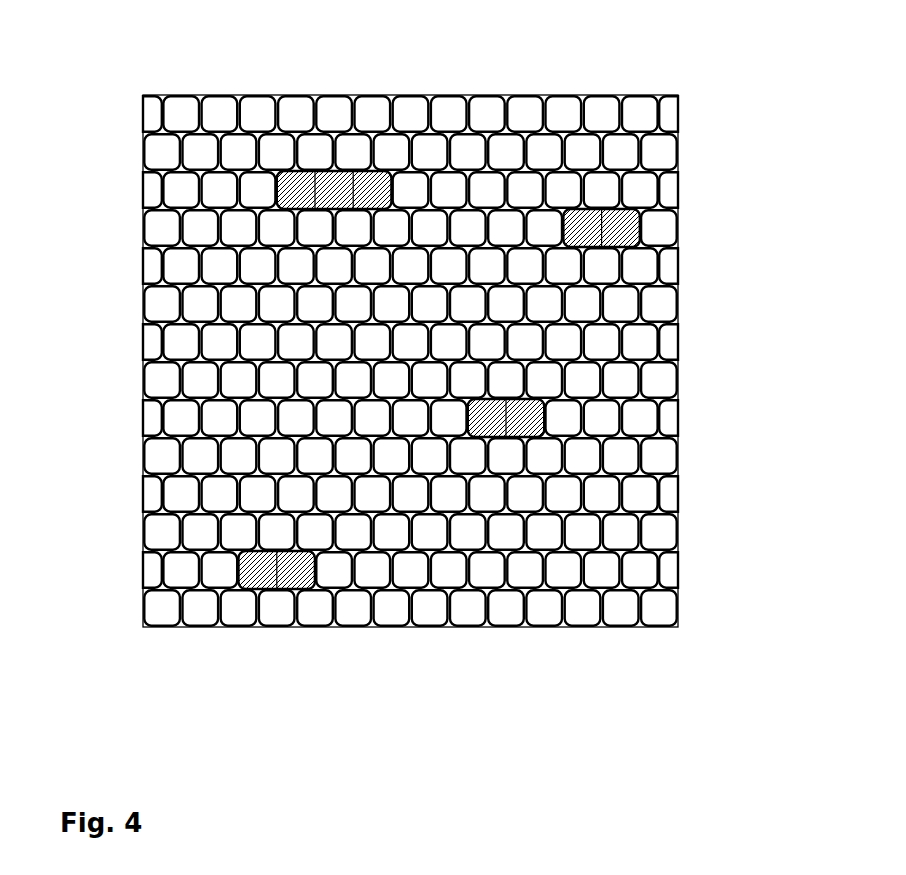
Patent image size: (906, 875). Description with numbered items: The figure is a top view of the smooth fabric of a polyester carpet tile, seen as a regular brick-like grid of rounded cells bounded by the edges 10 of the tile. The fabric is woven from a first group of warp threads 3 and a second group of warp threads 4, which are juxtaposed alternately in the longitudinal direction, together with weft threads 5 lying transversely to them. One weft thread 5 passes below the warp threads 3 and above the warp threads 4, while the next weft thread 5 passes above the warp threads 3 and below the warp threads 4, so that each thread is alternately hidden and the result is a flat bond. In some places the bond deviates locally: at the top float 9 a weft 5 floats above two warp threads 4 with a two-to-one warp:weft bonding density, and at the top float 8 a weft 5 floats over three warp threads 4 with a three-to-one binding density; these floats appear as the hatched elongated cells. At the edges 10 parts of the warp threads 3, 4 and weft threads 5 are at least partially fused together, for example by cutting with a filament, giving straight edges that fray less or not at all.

The warp threads 3 is at (662, 150).
The warp threads 4 is at (152, 115).
The weft threads 5 is at (358, 172).
The top float 8 is at (305, 172).
The top float 9 is at (292, 589).
The edges 10 is at (143, 226).